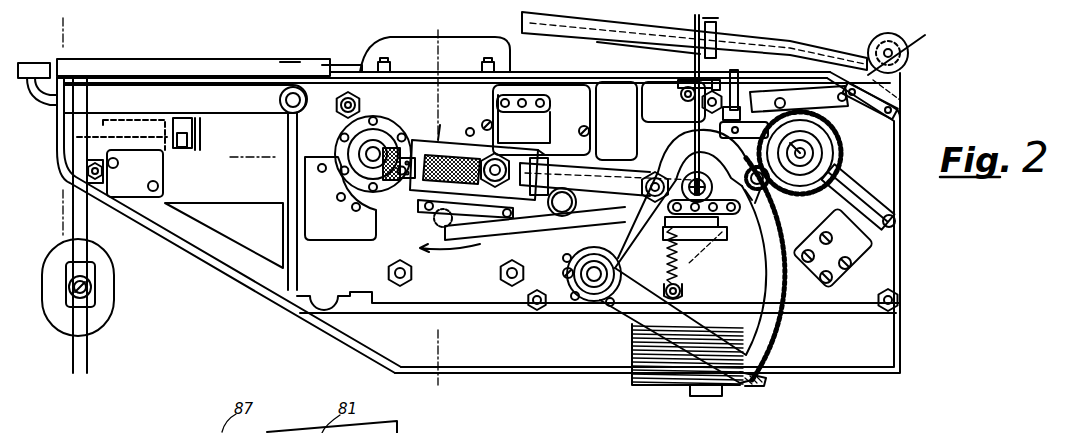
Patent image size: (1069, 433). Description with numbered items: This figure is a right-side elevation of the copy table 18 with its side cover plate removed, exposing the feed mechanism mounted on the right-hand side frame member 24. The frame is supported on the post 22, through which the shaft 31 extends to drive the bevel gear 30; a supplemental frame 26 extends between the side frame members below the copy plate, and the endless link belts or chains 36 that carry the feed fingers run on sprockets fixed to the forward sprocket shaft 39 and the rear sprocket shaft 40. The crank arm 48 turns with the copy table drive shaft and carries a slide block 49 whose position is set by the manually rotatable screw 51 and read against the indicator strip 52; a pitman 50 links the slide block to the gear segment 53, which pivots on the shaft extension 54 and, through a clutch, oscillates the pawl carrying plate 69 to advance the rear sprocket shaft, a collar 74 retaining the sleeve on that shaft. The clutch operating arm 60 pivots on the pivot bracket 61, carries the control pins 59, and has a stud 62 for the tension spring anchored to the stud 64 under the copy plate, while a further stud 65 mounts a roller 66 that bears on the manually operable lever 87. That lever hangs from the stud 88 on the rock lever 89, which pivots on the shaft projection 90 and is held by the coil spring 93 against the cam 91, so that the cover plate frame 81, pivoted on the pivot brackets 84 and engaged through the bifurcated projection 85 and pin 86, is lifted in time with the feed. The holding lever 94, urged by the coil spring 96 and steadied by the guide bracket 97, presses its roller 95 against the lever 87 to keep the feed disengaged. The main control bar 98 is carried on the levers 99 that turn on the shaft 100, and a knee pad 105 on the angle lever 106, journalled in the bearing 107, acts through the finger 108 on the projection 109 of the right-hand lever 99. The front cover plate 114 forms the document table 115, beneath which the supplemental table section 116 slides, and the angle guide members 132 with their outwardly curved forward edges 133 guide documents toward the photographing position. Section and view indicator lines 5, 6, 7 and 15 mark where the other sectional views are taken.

The section view 5 is at (250, 128).
The section view 6 is at (430, 102).
The section view 7 is at (51, 30).
The view 15 direction 15 is at (871, 70).
The copy table 18 is at (224, 53).
The post 22 is at (764, 381).
The side frame members 24 is at (594, 202).
The supplemental frame 26 is at (541, 120).
The bevel gear 30 is at (705, 196).
The shaft 31 is at (693, 388).
The endless link belts or chains 36 is at (535, 96).
The sprocket shaft 39 is at (378, 150).
The sprocket shaft 40 is at (799, 99).
The crank arm 48 is at (448, 143).
The slide block 49 is at (538, 148).
The pitman 50 is at (546, 170).
The manually rotatable screw 51 is at (476, 165).
The indicator strip 52 is at (432, 208).
The gear segment 53 is at (692, 270).
The shaft extension 54 is at (585, 298).
The control pins 59 is at (755, 203).
The clutch operating arm 60 is at (852, 203).
The pivot bracket 61 is at (872, 250).
The stud 62 is at (745, 121).
The stud 64 is at (733, 106).
The stud 65 is at (703, 178).
The roller 66 is at (694, 130).
The pawl carrying plate 69 is at (800, 143).
The collar 74 is at (812, 156).
The cover plate frame 81 is at (520, 19).
The pivot brackets 84 is at (898, 85).
The bifurcated projection 85 is at (690, 50).
The pin 86 is at (690, 36).
The manually operable lever 87 is at (700, 26).
The stud 88 is at (685, 175).
The rock lever 89 is at (545, 222).
The shaft projection 90 is at (572, 203).
The cam 91 is at (440, 140).
The coil spring 93 is at (671, 252).
The holding lever 94 is at (684, 80).
The roller 95 is at (640, 85).
The coil spring 96 is at (714, 90).
The guide bracket 97 is at (640, 90).
The main control bar 98 is at (38, 70).
The levers 99 is at (185, 99).
The shaft 100 is at (280, 103).
The knee pad 105 is at (112, 265).
The angle lever 106 is at (87, 362).
The bearing 107 is at (128, 152).
The finger 108 is at (178, 130).
The projection 109 is at (210, 126).
The front cover plate 114 is at (218, 270).
The document table 115 is at (290, 63).
The supplemental table section 116 is at (334, 65).
The angle guide members 132 is at (437, 56).
The curved forward edges 133 is at (367, 62).